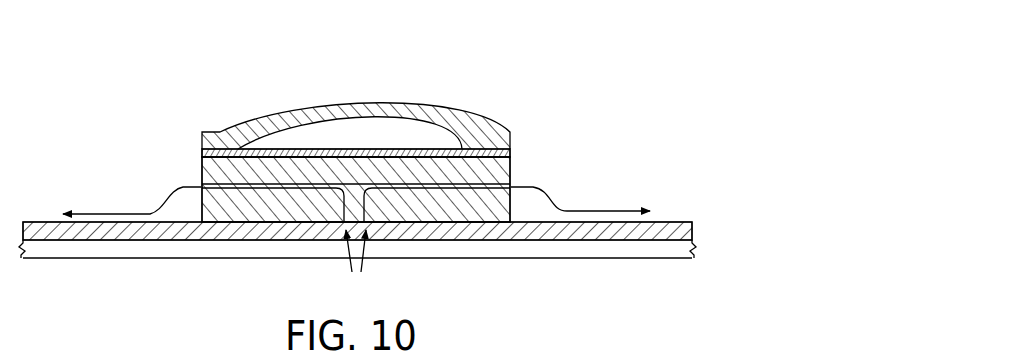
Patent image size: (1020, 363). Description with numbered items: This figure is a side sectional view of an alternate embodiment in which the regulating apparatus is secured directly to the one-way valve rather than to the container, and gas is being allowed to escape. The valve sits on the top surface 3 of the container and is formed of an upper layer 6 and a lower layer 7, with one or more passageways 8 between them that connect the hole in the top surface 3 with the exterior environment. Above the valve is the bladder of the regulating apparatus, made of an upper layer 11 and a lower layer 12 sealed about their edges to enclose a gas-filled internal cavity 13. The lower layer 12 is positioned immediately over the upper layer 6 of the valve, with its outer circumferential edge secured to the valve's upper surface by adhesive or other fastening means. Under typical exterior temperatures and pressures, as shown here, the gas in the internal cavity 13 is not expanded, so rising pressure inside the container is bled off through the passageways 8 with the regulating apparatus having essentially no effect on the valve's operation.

The top surface 3 is at (660, 227).
The upper layer 6 is at (511, 173).
The lower layer 7 is at (507, 237).
The passageways 8 is at (210, 183).
The upper layer 11 is at (430, 112).
The lower layer 12 is at (457, 148).
The internal cavity 13 is at (350, 133).